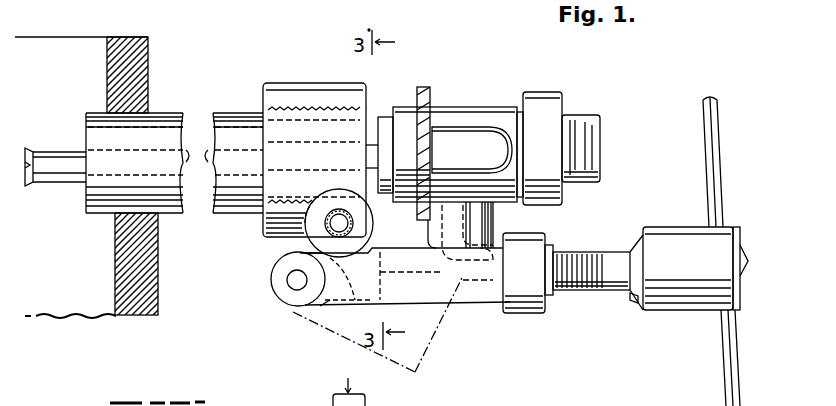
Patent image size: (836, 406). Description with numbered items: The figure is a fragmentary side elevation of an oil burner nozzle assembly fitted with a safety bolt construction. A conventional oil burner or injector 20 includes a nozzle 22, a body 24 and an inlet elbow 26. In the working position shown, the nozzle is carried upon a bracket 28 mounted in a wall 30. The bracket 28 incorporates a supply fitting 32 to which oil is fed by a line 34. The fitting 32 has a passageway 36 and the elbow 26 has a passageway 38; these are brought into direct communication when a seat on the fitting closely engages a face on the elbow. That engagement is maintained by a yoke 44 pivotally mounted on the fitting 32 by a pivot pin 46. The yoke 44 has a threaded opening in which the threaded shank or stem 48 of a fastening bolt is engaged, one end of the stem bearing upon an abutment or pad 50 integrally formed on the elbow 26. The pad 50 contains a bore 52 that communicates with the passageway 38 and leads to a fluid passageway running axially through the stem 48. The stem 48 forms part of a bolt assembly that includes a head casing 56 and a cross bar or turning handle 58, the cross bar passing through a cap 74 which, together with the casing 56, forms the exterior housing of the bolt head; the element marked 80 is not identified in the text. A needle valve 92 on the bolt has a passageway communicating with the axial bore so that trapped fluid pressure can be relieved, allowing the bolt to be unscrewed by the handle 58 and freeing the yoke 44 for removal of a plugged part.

The oil burner 20 is at (477, 75).
The nozzle 22 is at (46, 150).
The body 24 is at (492, 107).
The inlet elbow 26 is at (482, 226).
The bracket 28 is at (275, 85).
The wall 30 is at (148, 80).
The supply fitting 32 is at (320, 238).
The line 34 is at (262, 228).
The passageway 36 is at (272, 269).
The passageway 38 is at (430, 290).
The yoke 44 is at (325, 305).
The pivot pin 46 is at (287, 284).
The threaded shank or stem 48 is at (583, 292).
The abutment or pad 50 is at (492, 272).
The bore 52 is at (467, 278).
The head casing 56 is at (687, 321).
The cross bar or turning handle 58 is at (722, 154).
The cap 74 is at (739, 258).
The knob cap 80 is at (688, 227).
The needle valve 92 is at (635, 305).